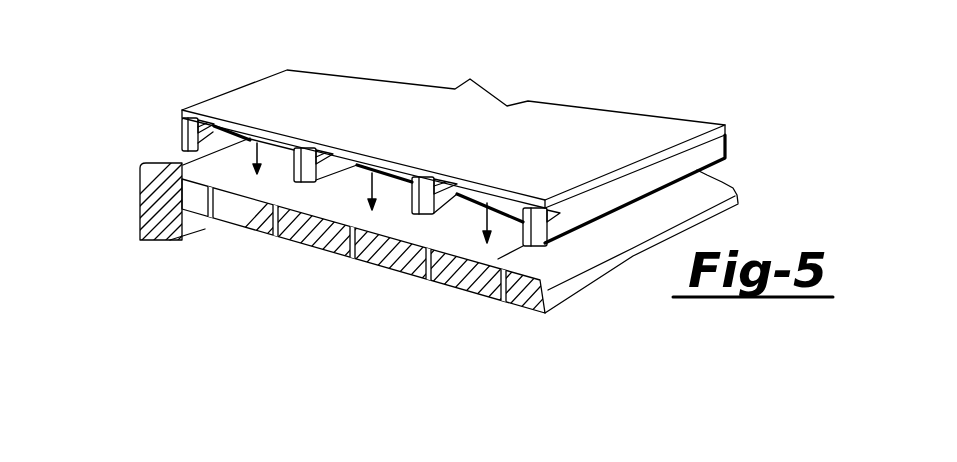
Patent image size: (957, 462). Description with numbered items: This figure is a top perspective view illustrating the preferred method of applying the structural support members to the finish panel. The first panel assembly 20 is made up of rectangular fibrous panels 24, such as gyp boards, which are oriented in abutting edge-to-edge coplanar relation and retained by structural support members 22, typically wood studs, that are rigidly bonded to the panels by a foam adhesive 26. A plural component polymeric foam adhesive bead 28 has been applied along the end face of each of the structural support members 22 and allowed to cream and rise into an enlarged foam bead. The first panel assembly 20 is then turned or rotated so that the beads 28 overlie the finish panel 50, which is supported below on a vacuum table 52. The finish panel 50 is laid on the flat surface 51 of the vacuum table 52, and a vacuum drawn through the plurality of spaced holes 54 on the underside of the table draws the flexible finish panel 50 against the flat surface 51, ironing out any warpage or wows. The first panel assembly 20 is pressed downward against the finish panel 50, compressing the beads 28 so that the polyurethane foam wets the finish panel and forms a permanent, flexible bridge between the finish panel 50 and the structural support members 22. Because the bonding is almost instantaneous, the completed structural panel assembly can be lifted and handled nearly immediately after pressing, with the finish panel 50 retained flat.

The first panel assembly 20 is at (453, 127).
The structural support members 22 is at (182, 110).
The rectangular fibrous panels 24 is at (421, 140).
The foam adhesive 26 is at (442, 173).
The polymeric foam adhesive bead 28 is at (506, 263).
The finish panel 50 is at (441, 207).
The flat surface 51 is at (170, 164).
The vacuum table 52 is at (717, 204).
The holes 54 is at (330, 252).